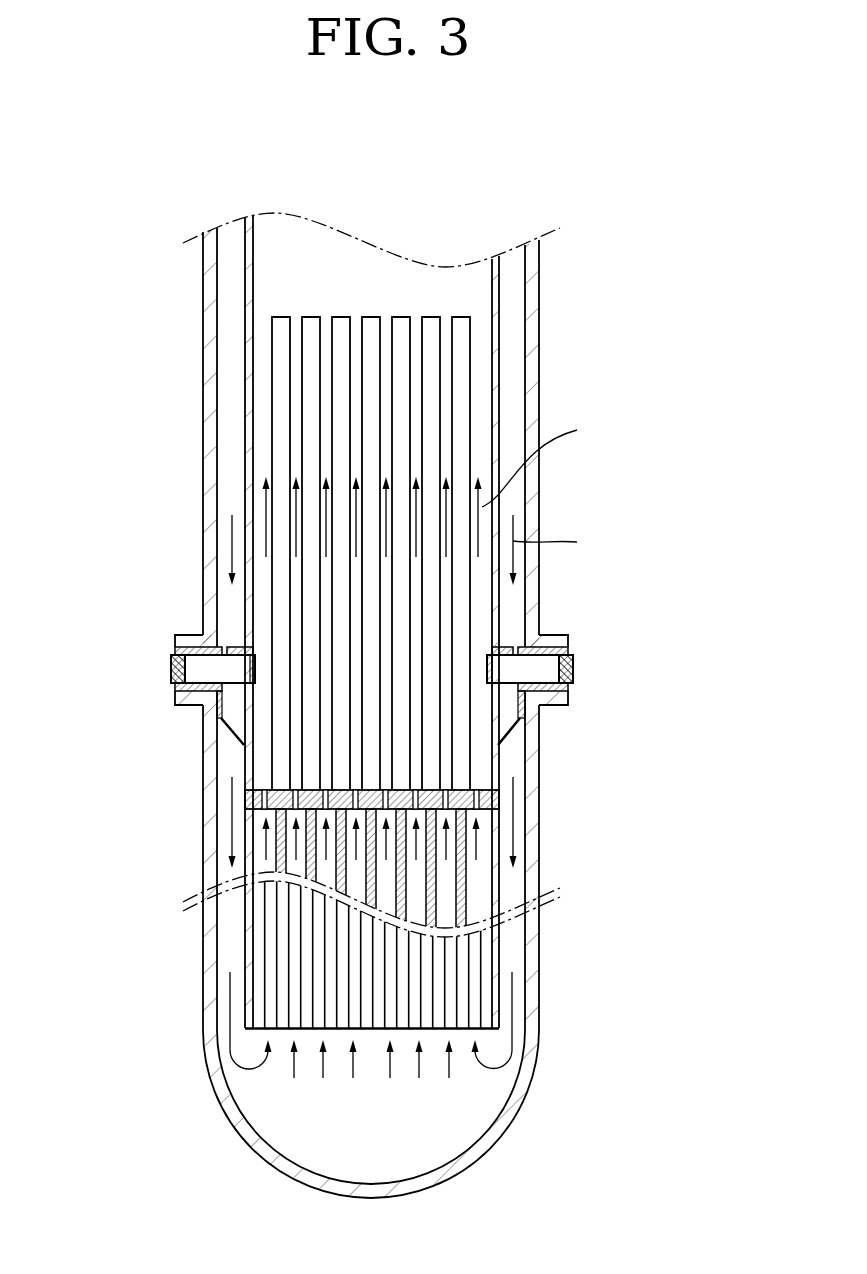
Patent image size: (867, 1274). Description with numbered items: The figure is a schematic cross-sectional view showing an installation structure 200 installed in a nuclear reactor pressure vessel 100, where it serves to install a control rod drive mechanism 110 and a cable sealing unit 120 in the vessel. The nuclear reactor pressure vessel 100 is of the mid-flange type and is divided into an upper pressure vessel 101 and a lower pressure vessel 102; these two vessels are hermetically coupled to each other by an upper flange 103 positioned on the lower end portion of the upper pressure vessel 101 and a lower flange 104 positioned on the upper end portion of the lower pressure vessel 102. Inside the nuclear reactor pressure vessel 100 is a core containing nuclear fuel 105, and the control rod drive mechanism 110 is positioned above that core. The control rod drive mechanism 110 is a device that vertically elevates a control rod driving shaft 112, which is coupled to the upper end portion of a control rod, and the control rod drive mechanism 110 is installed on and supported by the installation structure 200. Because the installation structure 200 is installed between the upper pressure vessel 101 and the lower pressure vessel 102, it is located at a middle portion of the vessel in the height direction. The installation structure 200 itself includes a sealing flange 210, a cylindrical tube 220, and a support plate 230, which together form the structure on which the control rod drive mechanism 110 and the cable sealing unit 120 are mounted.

The nuclear reactor pressure vessel 100 is at (543, 289).
The upper pressure vessel 101 is at (540, 332).
The lower pressure vessel 102 is at (542, 790).
The upper flange 103 is at (565, 639).
The lower flange 104 is at (560, 698).
The nuclear fuel 105 is at (485, 957).
The control rod drive mechanism 110 is at (272, 630).
The control rod driving shaft 112 is at (466, 898).
The cable sealing unit 120 is at (172, 665).
The installation structure 200 is at (233, 759).
The sealing flange 210 is at (198, 688).
The cylindrical tube 220 is at (247, 706).
The support plate 230 is at (262, 798).